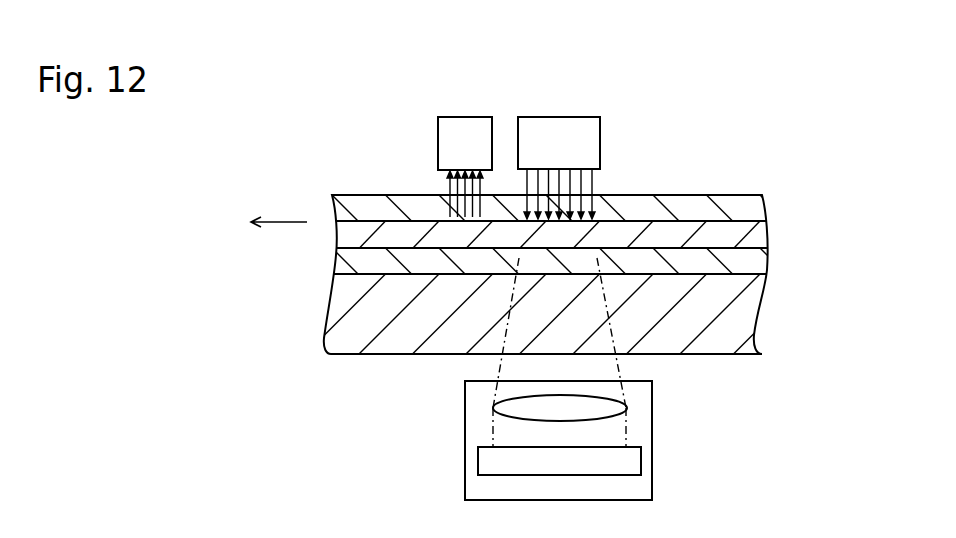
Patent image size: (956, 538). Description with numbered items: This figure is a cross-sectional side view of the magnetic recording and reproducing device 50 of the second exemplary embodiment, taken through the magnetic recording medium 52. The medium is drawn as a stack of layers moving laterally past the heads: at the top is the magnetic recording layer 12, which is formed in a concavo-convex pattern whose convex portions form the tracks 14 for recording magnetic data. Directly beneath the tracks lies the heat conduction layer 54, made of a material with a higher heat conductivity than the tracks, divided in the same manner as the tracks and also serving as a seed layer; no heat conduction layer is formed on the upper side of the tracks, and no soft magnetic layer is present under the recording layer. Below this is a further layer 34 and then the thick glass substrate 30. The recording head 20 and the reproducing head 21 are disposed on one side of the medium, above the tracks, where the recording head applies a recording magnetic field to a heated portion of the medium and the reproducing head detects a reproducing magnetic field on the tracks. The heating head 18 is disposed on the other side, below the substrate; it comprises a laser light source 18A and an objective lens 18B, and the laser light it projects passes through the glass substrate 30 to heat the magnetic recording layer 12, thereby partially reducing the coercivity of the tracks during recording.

The magnetic recording and reproducing device 50 is at (629, 72).
The magnetic recording medium 52 is at (385, 181).
The tracks 14 is at (707, 195).
The magnetic recording layer 12 is at (767, 212).
The heat conduction layer 54 is at (768, 238).
The reflective layer 34 is at (768, 267).
The glass substrate 30 is at (757, 307).
The reproducing head 21 is at (462, 117).
The recording head 20 is at (566, 117).
The heating head 18 is at (560, 379).
The objective lens 18B is at (627, 408).
The laser light source 18A is at (641, 463).